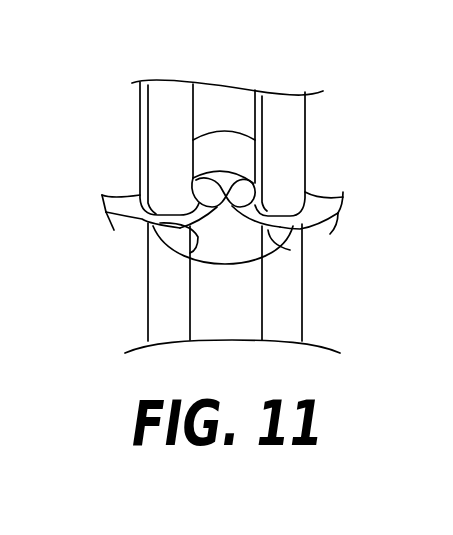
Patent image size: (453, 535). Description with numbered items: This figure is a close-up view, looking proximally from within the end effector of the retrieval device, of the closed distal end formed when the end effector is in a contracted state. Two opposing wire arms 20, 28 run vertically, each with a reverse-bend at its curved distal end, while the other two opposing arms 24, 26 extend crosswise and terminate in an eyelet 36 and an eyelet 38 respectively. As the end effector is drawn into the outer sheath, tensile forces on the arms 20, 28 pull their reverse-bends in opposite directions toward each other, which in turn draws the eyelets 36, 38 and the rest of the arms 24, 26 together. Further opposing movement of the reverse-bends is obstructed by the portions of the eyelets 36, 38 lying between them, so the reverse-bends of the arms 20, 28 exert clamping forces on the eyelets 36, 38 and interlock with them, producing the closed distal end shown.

The arm 20 is at (140, 115).
The arm 24 is at (123, 197).
The arm 26 is at (323, 198).
The arm 28 is at (313, 305).
The eyelet 36 is at (217, 253).
The eyelet 38 is at (265, 250).